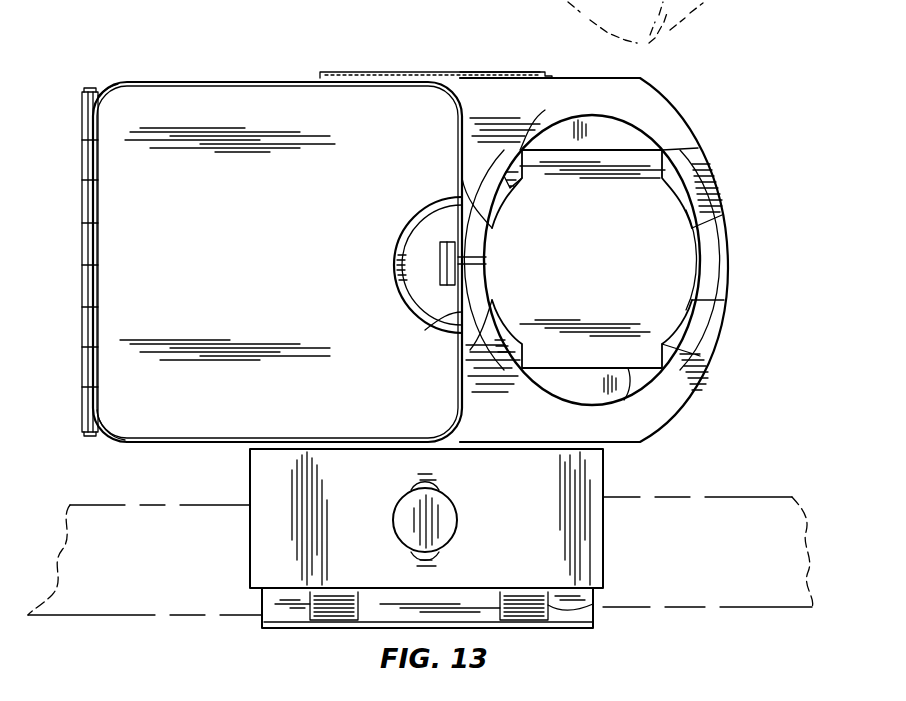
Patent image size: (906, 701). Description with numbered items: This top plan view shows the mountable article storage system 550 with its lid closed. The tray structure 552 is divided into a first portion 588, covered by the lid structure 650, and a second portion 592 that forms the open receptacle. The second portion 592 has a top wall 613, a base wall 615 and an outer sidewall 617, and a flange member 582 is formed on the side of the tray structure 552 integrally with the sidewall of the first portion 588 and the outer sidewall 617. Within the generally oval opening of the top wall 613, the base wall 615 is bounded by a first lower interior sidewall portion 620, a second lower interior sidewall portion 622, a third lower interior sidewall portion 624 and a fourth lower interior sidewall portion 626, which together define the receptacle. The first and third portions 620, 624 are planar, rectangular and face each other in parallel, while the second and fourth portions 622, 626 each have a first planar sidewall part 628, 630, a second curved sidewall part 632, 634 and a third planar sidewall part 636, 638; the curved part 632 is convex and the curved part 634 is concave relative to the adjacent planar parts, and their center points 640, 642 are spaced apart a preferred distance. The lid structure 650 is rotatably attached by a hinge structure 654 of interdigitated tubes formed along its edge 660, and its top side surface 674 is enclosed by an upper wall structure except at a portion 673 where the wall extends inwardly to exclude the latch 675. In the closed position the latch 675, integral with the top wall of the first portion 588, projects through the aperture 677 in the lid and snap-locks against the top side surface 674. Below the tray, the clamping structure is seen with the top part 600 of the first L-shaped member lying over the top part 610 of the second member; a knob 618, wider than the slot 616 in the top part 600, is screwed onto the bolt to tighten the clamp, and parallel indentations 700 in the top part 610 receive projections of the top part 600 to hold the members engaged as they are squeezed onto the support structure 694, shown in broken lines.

The tape drive assembly 550 is at (712, 118).
The tray structure 552 is at (472, 72).
The flange member 582 is at (376, 72).
The first portion 588 is at (116, 441).
The second portion 592 is at (645, 442).
The top part 600 is at (603, 488).
The top part 610 is at (575, 628).
The top wall 613 is at (521, 411).
The base wall 615 is at (592, 259).
The slot 616 is at (440, 478).
The outer sidewall 617 is at (586, 78).
The knob 618 is at (457, 516).
The first lower interior sidewall portion 620 is at (605, 122).
The second lower interior sidewall portion 622 is at (698, 246).
The third lower interior sidewall portion 624 is at (626, 398).
The fourth lower interior sidewall portion 626 is at (500, 170).
The first planar sidewall part 628 is at (698, 150).
The first planar sidewall part 630 is at (538, 112).
The second curved sidewall part 632 is at (705, 214).
The second curved sidewall part 634 is at (470, 210).
The third planar sidewall part 636 is at (702, 348).
The third planar sidewall part 638 is at (485, 340).
The center point 640 is at (708, 270).
The center point 642 is at (440, 265).
The lid structure 650 is at (204, 82).
The hinge structure 654 is at (82, 196).
The edge 660 is at (103, 92).
The portion 673 is at (440, 300).
The top side surface 674 is at (204, 162).
The latch 675 is at (440, 250).
The aperture 677 is at (480, 266).
The support structure 694 is at (770, 497).
The indentations 700 is at (592, 606).